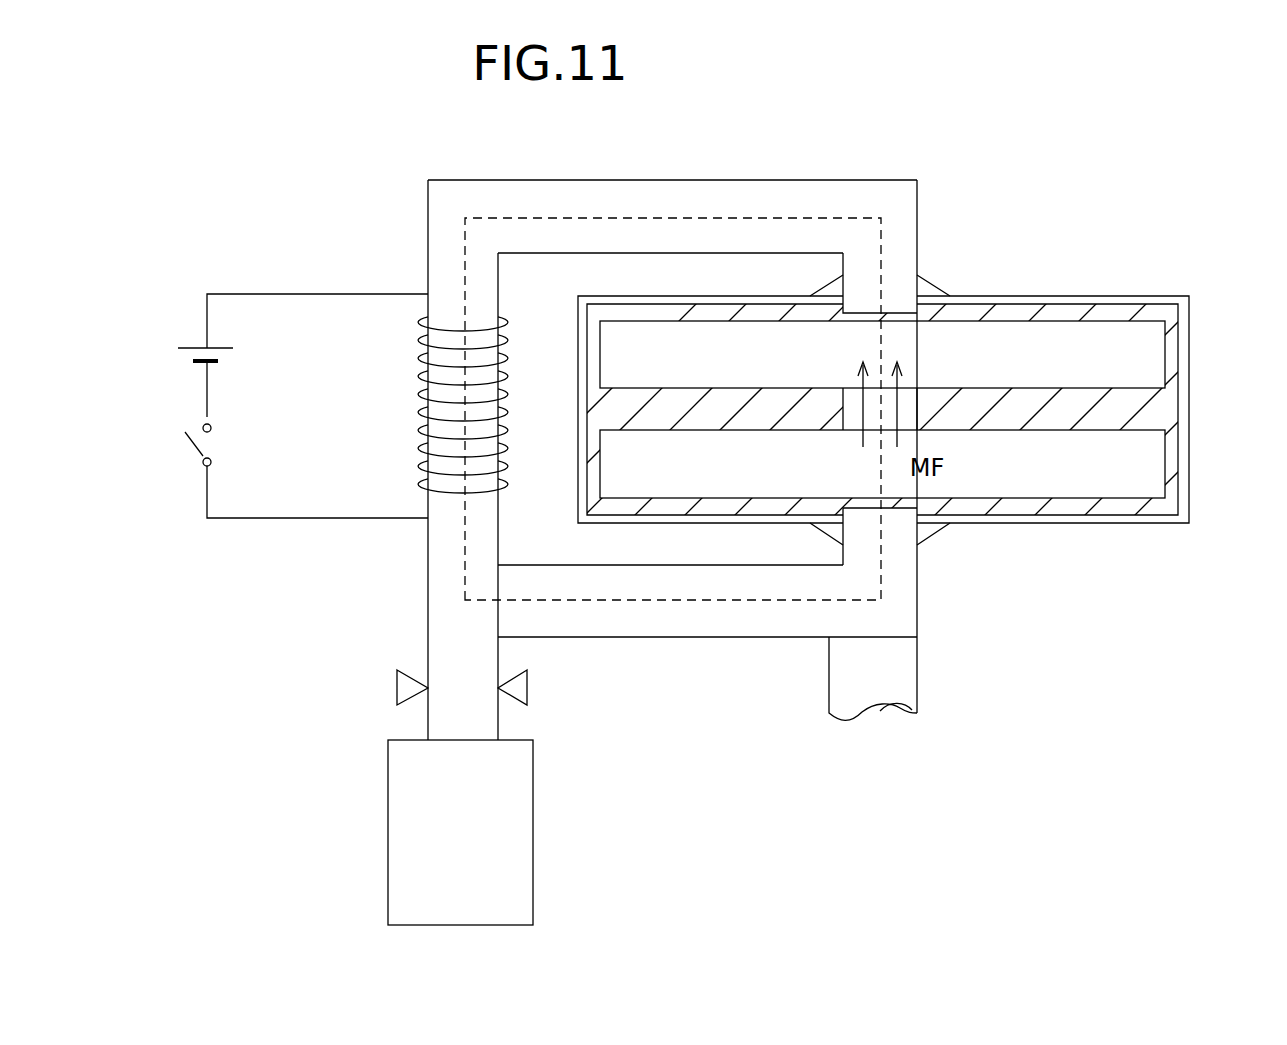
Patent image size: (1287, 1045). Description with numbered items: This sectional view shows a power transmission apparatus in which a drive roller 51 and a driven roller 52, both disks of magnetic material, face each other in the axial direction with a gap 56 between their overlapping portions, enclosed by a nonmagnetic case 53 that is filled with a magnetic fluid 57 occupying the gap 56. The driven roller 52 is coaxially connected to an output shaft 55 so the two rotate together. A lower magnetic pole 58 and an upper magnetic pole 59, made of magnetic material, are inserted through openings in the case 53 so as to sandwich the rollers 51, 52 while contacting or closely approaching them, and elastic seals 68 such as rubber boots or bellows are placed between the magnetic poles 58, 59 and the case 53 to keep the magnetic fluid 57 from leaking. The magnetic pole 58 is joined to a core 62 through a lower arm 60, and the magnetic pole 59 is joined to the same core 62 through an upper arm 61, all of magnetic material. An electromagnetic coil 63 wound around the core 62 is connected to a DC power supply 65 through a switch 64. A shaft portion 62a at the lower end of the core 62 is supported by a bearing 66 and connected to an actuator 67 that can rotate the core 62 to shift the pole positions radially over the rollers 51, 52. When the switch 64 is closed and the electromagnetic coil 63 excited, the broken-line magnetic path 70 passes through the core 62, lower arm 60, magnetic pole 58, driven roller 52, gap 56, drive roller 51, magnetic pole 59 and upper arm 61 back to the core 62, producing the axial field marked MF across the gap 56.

The drive roller 51 is at (1140, 336).
The driven roller 52 is at (1080, 496).
The case 53 is at (1192, 413).
The output shaft 55 is at (917, 668).
The gap 56 is at (848, 412).
The magnetic fluid 57 is at (1075, 305).
The magnetic pole 58 is at (903, 578).
The magnetic pole 59 is at (910, 222).
The lower arm 60 is at (660, 628).
The upper arm 61 is at (668, 196).
The core 62 is at (432, 228).
The shaft portion 62a is at (434, 647).
The electromagnetic coil 63 is at (415, 367).
The switch 64 is at (190, 446).
The DC power supply 65 is at (193, 347).
The bearing 66 is at (397, 688).
The actuator 67 is at (400, 836).
The seals 68 is at (933, 277).
The magnetic path 70 is at (757, 602).